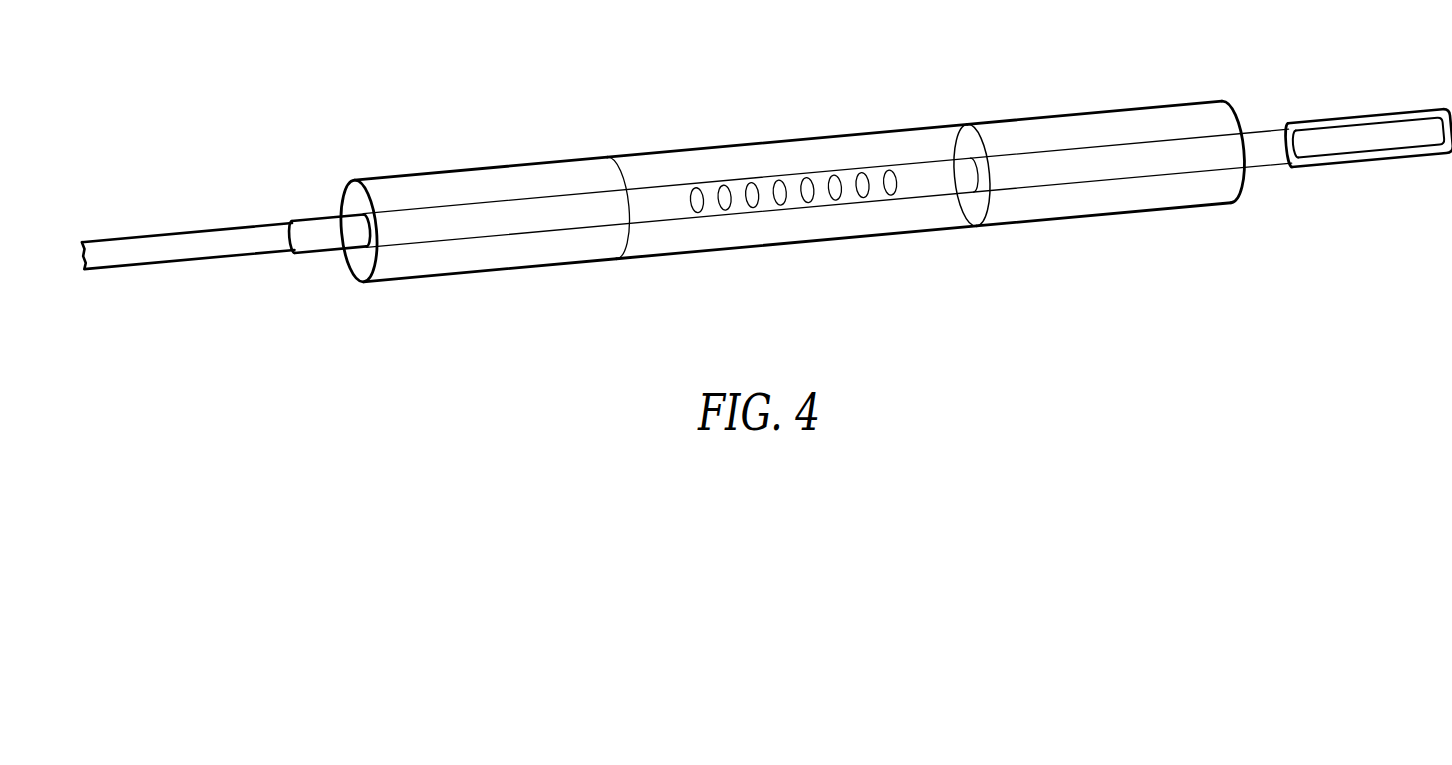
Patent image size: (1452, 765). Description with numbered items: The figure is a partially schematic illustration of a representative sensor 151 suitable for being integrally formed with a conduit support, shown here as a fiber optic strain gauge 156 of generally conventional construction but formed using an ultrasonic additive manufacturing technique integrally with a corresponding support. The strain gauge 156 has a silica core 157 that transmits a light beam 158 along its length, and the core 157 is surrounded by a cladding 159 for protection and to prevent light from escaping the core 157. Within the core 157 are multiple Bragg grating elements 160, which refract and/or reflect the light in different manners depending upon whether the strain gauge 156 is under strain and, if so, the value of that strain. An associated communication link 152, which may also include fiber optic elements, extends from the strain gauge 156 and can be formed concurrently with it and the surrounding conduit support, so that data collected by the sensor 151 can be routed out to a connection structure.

The sensor 151 is at (768, 80).
The communication link 152 is at (1303, 168).
The fiber optic strain gauge 156 is at (1037, 113).
The silica core 157 is at (317, 225).
The light beam 158 is at (192, 240).
The cladding 159 is at (467, 167).
The Bragg grating elements 160 is at (807, 205).